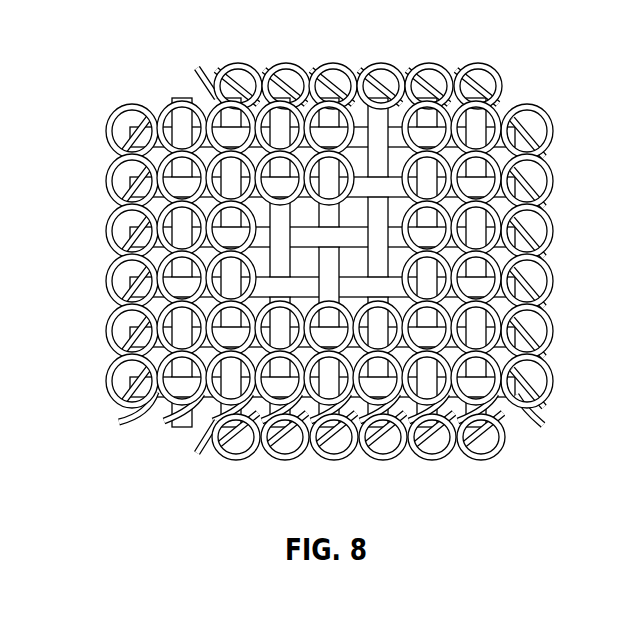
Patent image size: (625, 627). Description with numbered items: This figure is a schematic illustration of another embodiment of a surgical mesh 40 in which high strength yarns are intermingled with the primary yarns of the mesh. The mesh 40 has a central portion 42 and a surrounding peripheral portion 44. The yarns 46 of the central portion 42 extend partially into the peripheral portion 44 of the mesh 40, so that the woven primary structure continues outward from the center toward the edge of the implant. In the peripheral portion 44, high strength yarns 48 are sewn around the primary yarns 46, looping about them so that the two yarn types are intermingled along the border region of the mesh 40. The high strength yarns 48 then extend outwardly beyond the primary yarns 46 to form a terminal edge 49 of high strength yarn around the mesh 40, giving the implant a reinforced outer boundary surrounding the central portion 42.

The mesh 40 is at (284, 238).
The central portion 42 is at (301, 266).
The peripheral portion 44 is at (100, 173).
The yarns 46 is at (166, 130).
The high strength yarns 48 is at (190, 286).
The terminal edge 49 is at (176, 440).